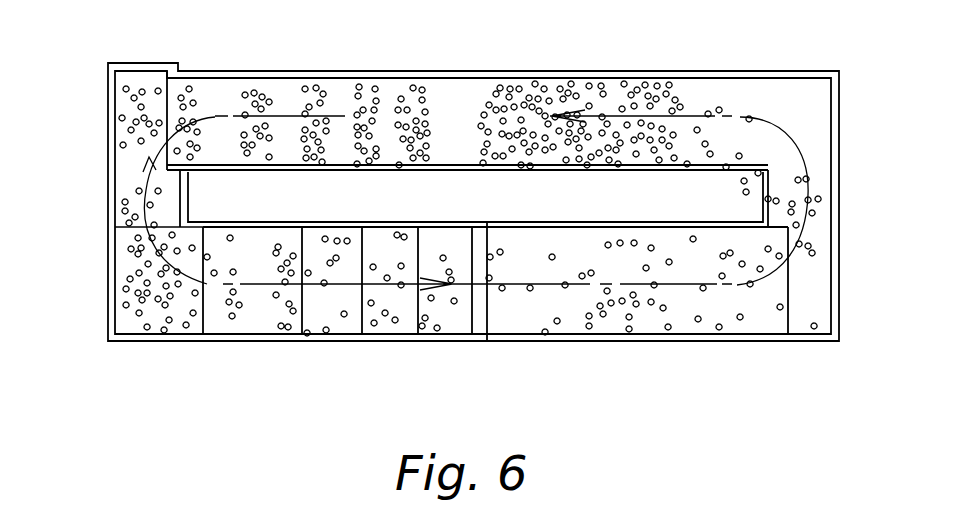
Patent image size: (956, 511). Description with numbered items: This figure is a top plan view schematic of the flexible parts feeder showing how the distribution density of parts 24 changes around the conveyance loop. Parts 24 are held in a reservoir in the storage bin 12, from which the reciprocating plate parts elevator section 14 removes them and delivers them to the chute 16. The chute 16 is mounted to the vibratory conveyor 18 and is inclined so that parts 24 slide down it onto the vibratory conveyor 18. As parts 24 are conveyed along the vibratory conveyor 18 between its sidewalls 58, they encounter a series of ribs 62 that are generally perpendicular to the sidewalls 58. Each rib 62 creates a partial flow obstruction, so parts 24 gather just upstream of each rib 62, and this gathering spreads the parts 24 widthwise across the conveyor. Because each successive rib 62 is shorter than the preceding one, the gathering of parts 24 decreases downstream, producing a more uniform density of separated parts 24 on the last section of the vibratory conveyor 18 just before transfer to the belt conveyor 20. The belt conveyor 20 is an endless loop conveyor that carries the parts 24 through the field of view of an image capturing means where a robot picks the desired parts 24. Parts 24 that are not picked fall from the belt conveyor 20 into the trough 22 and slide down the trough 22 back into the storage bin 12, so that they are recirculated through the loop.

The storage bin 12 is at (672, 92).
The reciprocating plate parts elevator section 14 is at (343, 100).
The chute 16 is at (133, 94).
The vibratory conveyor 18 is at (321, 327).
The belt conveyor 20 is at (707, 322).
The trough 22 is at (818, 288).
The parts 24 is at (262, 85).
The sidewalls 58 is at (428, 222).
The rib 62 is at (312, 240).